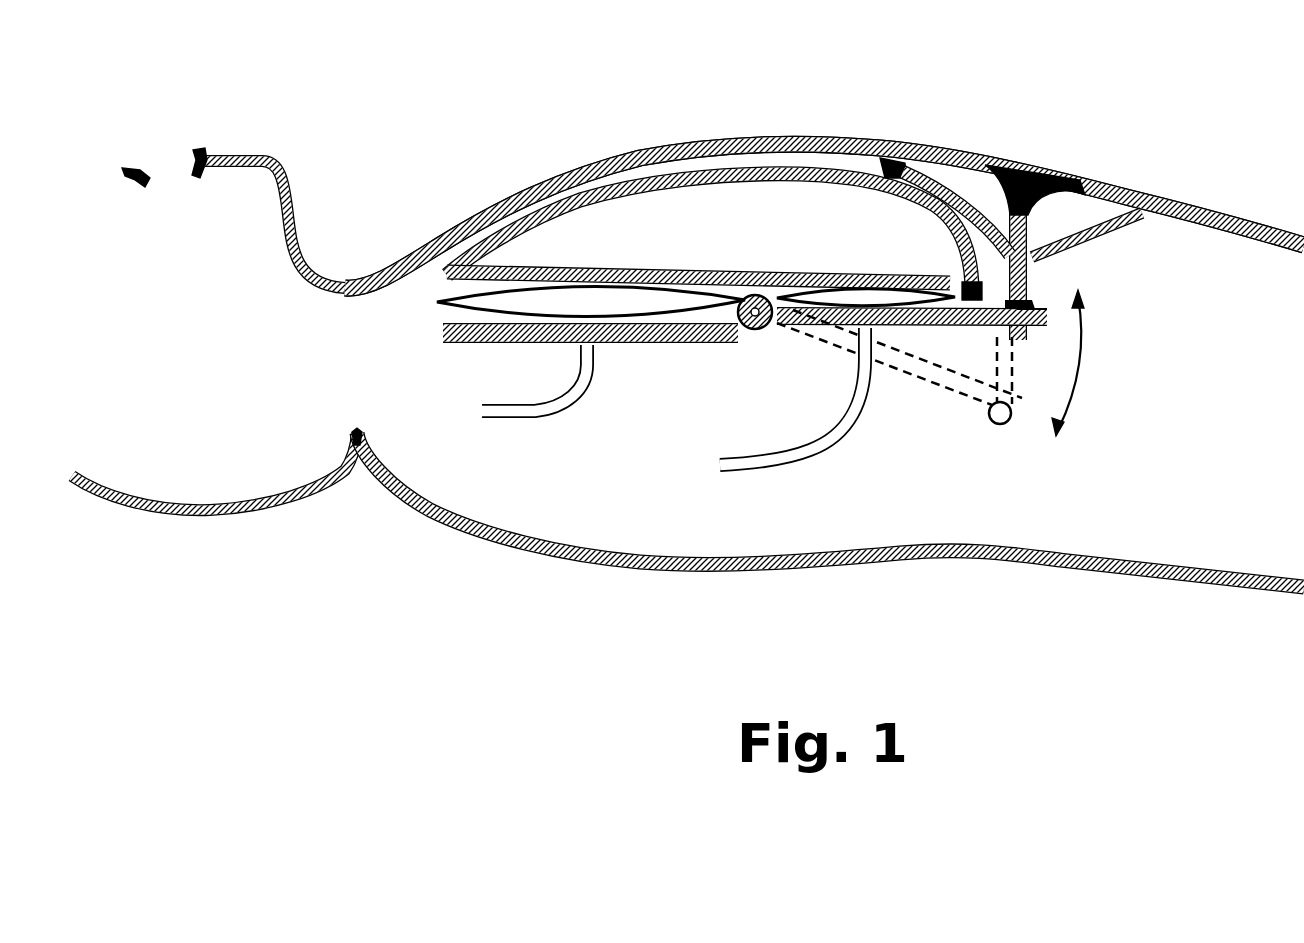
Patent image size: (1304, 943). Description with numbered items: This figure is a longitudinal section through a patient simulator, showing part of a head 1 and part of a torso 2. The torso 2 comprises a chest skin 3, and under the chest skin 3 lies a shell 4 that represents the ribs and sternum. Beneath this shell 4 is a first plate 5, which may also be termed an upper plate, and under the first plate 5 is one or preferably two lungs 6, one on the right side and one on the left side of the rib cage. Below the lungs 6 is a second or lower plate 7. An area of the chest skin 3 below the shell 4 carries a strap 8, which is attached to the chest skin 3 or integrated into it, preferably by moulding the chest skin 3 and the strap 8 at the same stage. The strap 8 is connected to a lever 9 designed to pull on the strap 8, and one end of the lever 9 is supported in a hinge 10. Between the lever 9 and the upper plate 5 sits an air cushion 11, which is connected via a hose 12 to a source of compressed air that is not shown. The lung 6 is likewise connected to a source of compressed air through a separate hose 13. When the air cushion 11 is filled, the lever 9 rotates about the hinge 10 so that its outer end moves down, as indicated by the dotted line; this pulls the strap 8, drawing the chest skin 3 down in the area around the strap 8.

The head 1 is at (287, 157).
The torso 2 is at (877, 90).
The chest skin 3 is at (651, 150).
The shell 4 is at (580, 192).
The first plate 5 is at (547, 268).
The lung 6 is at (613, 300).
The second plate 7 is at (641, 344).
The strap 8 is at (1036, 259).
The lever 9 is at (922, 328).
The hinge 10 is at (748, 338).
The air cushion 11 is at (888, 295).
The hose 12 is at (850, 437).
The hose 13 is at (565, 392).